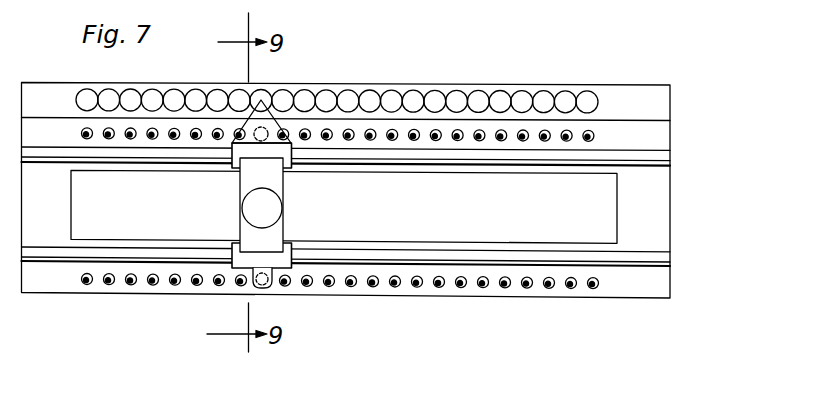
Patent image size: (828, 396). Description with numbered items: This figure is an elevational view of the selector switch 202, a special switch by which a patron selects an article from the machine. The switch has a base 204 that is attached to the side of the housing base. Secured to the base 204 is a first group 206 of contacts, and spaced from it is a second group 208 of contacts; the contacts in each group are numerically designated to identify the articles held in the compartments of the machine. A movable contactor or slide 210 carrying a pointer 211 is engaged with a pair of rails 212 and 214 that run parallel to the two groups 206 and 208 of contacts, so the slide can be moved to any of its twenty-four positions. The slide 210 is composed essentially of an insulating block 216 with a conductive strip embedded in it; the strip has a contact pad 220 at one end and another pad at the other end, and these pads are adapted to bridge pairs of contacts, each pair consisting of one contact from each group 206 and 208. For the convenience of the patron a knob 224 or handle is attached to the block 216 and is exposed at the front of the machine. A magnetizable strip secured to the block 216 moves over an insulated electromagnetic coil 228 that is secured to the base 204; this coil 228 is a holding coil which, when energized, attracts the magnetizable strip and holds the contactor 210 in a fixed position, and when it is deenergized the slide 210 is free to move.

The selector switch 202 is at (388, 86).
The base 204 is at (653, 117).
The first group of contacts 206 is at (592, 131).
The second group of contacts 208 is at (550, 286).
The movable contactor 210 is at (259, 196).
The pointer 211 is at (265, 112).
The rail 212 is at (512, 256).
The rail 214 is at (420, 159).
The insulating block 216 is at (268, 177).
The contact pad 220 is at (256, 287).
The knob 224 is at (273, 213).
The electromagnetic coil 228 is at (603, 200).